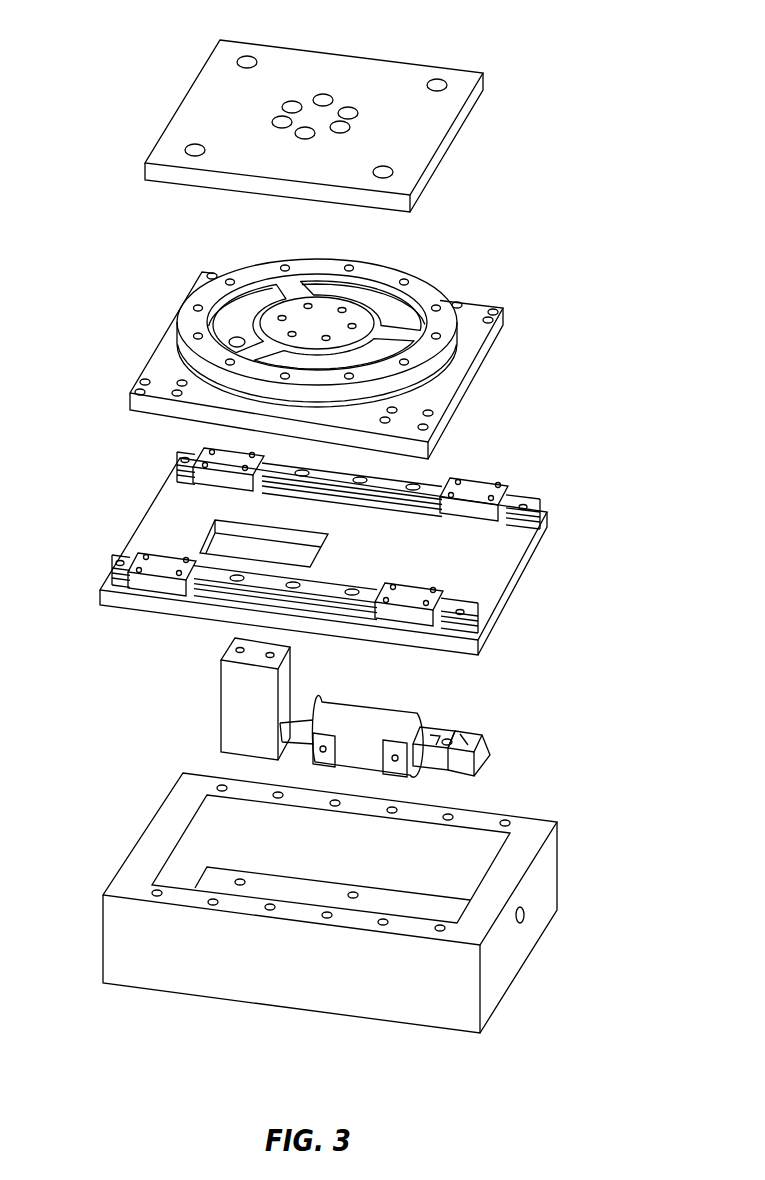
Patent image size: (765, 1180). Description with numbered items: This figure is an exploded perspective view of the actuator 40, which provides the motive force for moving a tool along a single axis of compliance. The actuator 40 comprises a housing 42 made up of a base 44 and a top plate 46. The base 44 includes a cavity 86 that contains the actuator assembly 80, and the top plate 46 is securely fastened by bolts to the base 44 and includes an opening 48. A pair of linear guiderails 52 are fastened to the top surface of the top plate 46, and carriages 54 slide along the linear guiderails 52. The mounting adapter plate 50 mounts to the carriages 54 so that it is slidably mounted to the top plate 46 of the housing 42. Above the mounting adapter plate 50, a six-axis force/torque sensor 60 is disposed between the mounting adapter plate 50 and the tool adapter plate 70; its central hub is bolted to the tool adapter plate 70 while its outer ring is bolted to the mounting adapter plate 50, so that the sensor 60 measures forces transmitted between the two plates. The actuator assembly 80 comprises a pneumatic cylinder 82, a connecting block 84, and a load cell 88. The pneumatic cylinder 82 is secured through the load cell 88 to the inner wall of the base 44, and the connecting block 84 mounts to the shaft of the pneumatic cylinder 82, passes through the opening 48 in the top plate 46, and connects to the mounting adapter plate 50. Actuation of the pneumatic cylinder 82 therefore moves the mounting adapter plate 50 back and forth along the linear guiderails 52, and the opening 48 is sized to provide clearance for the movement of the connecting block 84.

The actuator 40 is at (641, 443).
The housing 42 is at (147, 718).
The base 44 is at (325, 906).
The top plate 46 is at (346, 545).
The opening 48 is at (227, 533).
The mounting adapter plate 50 is at (168, 362).
The linear guiderails 52 is at (522, 493).
The carriages 54 is at (475, 483).
The force/torque sensor 60 is at (408, 265).
The tool adapter plate 70 is at (352, 77).
The actuator assembly 80 is at (384, 706).
The pneumatic cylinder 82 is at (352, 718).
The connecting block 84 is at (243, 700).
The cavity 86 is at (223, 840).
The load cell 88 is at (472, 738).